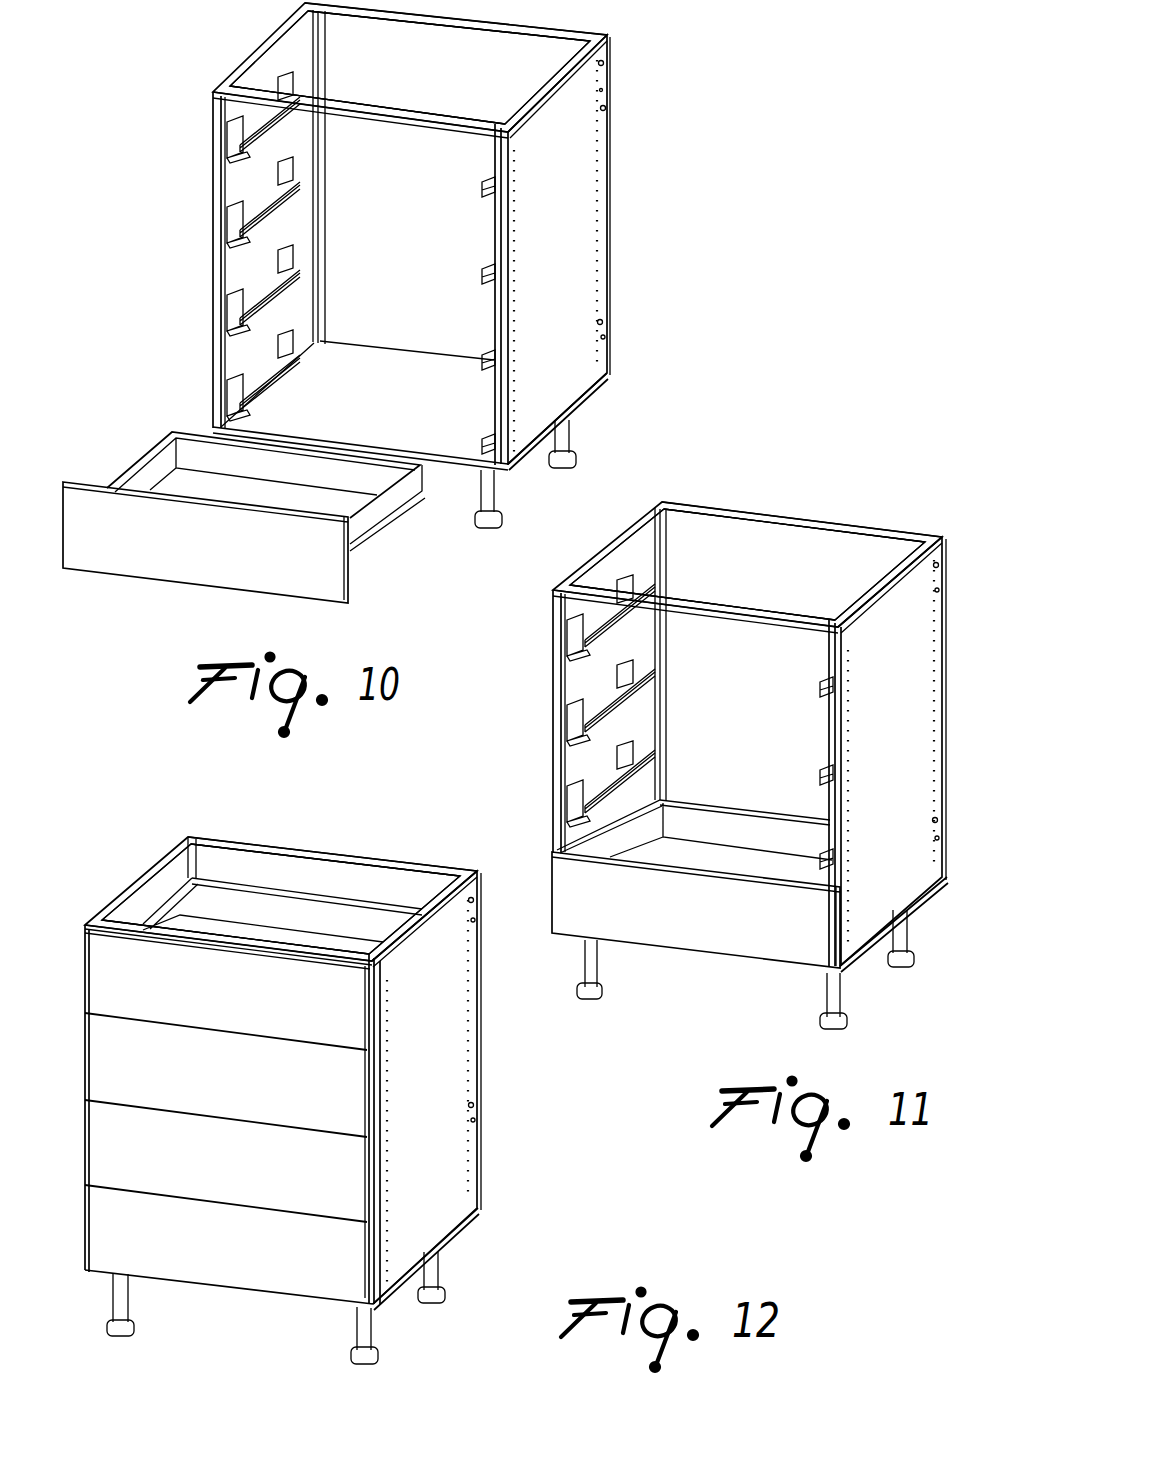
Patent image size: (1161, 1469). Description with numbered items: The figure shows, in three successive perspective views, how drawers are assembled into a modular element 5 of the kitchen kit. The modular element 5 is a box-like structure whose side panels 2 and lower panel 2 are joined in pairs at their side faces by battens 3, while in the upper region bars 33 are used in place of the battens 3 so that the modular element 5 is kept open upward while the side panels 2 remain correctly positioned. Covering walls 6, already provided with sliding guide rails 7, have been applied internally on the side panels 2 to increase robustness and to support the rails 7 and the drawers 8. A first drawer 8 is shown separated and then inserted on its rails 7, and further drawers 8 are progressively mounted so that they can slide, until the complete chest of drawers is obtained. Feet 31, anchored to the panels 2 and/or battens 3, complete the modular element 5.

In FIG. 10, the panel 2 is at (553, 213).
In FIG. 11, the panel 2 is at (910, 660).
In FIG. 12, the panel 2 is at (425, 1050).
In FIG. 10, the batten 3 is at (258, 48).
In FIG. 11, the batten 3 is at (905, 560).
In FIG. 12, the batten 3 is at (128, 886).
In FIG. 10, the modular element 5 is at (494, 78).
In FIG. 11, the modular element 5 is at (800, 565).
In FIG. 12, the modular element 5 is at (353, 893).
In FIG. 10, the covering wall 6 is at (230, 262).
In FIG. 11, the covering wall 6 is at (600, 756).
In FIG. 10, the sliding guide rail 7 is at (272, 125).
In FIG. 11, the sliding guide rail 7 is at (612, 626).
In FIG. 10, the drawer 8 is at (154, 545).
In FIG. 11, the drawer 8 is at (742, 910).
In FIG. 12, the drawer 8 is at (150, 973).
In FIG. 10, the foot 31 is at (563, 440).
In FIG. 11, the foot 31 is at (588, 992).
In FIG. 12, the foot 31 is at (122, 1332).
In FIG. 10, the bar 33 is at (372, 106).
In FIG. 11, the bar 33 is at (736, 607).
In FIG. 12, the bar 33 is at (268, 940).